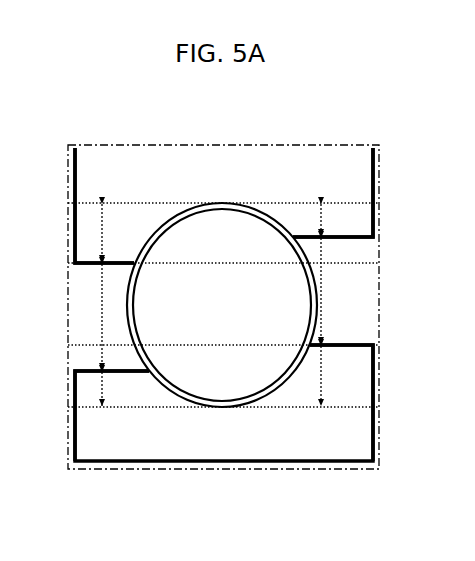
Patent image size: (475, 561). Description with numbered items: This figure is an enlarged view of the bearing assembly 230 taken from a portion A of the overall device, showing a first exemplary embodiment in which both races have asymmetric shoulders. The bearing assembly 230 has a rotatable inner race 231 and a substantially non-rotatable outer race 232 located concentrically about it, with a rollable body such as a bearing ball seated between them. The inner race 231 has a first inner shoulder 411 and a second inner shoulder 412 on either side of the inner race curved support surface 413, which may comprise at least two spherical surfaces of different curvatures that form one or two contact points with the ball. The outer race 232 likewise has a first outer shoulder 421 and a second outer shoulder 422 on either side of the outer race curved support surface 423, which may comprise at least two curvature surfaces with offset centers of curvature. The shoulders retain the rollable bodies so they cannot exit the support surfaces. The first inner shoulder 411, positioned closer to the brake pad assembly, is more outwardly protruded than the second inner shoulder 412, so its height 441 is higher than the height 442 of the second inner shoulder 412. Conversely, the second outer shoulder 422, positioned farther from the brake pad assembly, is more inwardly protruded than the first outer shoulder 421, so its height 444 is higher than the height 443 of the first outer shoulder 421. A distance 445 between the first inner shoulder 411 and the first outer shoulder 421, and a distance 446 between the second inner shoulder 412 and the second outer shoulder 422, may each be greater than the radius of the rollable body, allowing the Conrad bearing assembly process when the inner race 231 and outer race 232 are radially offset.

The bearing assembly 230 is at (213, 483).
The inner race 231 is at (362, 171).
The outer race 232 is at (355, 446).
The first inner shoulder 411 is at (75, 266).
The second inner shoulder 412 is at (374, 240).
The inner race curved support surface 413 is at (224, 203).
The first outer shoulder 421 is at (75, 369).
The second outer shoulder 422 is at (374, 344).
The outer race curved support surface 423 is at (218, 408).
The height of the first inner shoulder 441 is at (120, 233).
The height of the second inner shoulder 442 is at (340, 220).
The height of the first outer shoulder 443 is at (120, 389).
The height of the second outer shoulder 444 is at (339, 376).
The distance between the first inner shoulder and the first outer shoulder 445 is at (87, 317).
The distance between the second inner shoulder and the second outer shoulder 446 is at (340, 291).
The portion A is at (63, 470).